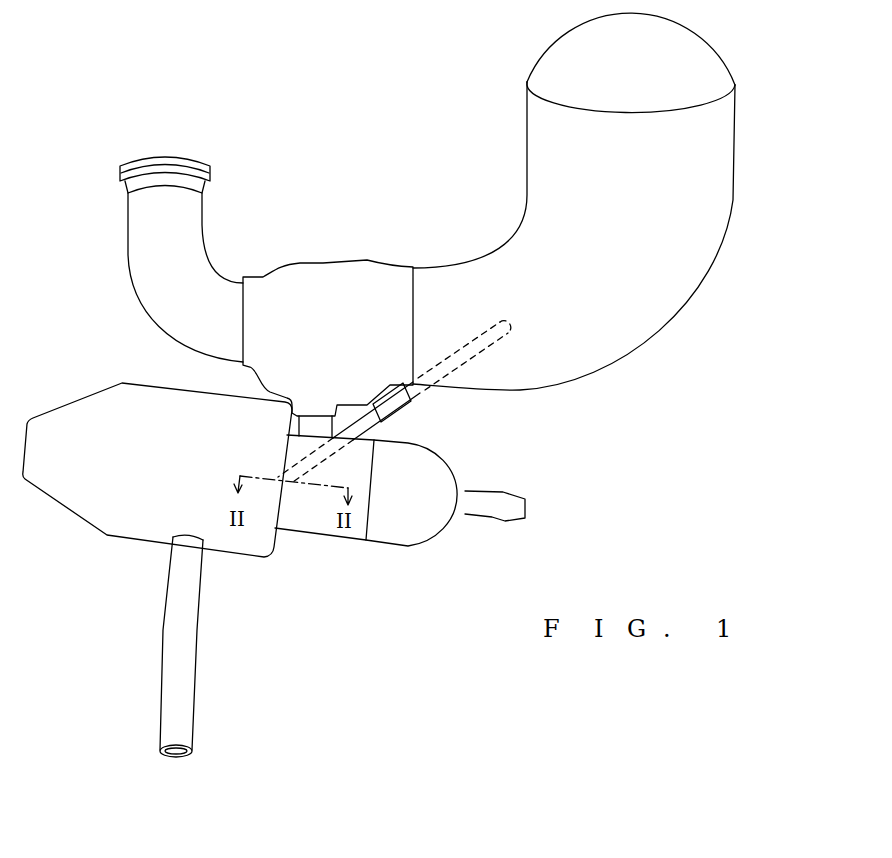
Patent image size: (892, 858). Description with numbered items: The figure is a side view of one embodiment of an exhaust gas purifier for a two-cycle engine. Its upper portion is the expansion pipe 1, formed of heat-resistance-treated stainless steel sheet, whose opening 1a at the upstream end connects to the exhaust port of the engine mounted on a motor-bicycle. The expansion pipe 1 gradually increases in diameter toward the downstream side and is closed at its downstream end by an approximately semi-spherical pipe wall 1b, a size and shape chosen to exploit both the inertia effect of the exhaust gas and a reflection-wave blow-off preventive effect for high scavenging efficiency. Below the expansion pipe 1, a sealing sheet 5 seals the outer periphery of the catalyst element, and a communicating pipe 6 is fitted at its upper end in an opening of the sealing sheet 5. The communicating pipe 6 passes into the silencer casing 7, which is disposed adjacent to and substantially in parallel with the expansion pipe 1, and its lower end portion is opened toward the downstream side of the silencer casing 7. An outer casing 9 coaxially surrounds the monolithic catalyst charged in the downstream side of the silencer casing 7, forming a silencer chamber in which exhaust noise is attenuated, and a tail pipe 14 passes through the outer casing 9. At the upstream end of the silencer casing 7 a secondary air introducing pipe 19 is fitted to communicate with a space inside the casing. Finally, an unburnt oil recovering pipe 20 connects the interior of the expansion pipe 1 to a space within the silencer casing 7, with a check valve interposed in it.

The expansion pipe 1 is at (491, 212).
The opening 1a is at (168, 156).
The semi-spherical pipe wall 1b is at (552, 63).
The sealing sheet 5 is at (317, 298).
The communicating pipe 6 is at (310, 423).
The silencer casing 7 is at (327, 527).
The outer casing 9 is at (142, 408).
The tail pipe 14 is at (185, 683).
The secondary air introducing pipe 19 is at (493, 519).
The unburnt oil recovering pipe 20 is at (398, 412).